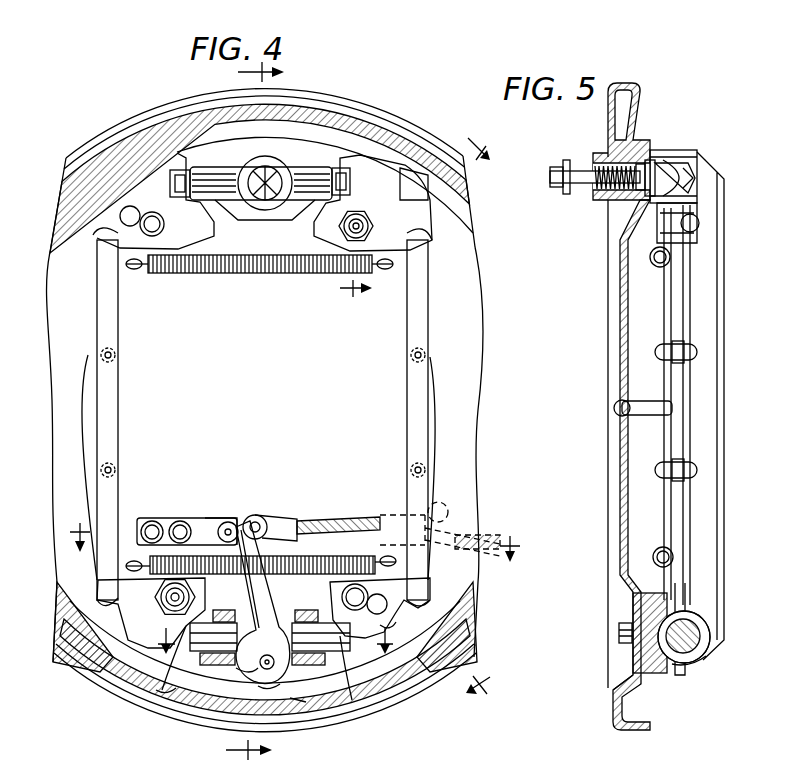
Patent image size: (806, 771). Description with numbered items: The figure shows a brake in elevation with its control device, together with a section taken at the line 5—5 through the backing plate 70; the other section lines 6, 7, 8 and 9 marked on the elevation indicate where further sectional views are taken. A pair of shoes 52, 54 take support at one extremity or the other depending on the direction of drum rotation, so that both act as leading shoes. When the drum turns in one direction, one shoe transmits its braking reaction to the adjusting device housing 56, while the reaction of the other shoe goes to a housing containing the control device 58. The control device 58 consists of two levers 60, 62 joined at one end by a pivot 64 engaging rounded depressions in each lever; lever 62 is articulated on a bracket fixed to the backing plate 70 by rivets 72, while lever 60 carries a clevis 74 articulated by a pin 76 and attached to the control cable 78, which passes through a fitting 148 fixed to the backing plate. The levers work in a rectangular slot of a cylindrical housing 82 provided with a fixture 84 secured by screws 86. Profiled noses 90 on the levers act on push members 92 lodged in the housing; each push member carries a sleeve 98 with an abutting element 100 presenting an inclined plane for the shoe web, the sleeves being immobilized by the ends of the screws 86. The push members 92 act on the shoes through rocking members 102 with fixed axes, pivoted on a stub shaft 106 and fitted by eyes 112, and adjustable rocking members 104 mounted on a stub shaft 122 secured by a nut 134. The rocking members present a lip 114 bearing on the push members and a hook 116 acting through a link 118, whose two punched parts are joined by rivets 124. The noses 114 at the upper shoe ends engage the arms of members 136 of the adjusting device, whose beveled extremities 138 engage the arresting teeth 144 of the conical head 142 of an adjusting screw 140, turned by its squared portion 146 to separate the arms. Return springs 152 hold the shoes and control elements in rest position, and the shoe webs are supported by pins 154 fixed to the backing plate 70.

In FIG. 4, the shoe 52 is at (445, 245).
In FIG. 4, the shoe 54 is at (82, 585).
In FIG. 4, the adjusting device housing 56 is at (374, 90).
In FIG. 4, the control device 58 is at (316, 602).
In FIG. 4, the lever 60 is at (295, 520).
In FIG. 4, the lever 62 is at (214, 517).
In FIG. 5, the lever 62 is at (687, 588).
In FIG. 4, the pivot 64 is at (245, 665).
In FIG. 5, the backing plate 70 is at (621, 313).
In FIG. 4, the rivets 72 is at (178, 521).
In FIG. 4, the clevis 74 is at (280, 513).
In FIG. 4, the pin 76 is at (266, 518).
In FIG. 4, the control cable 78 is at (355, 519).
In FIG. 4, the cylindrical housing 82 is at (298, 700).
In FIG. 5, the cylindrical housing 82 is at (640, 648).
In FIG. 4, the fixture 84 is at (258, 682).
In FIG. 5, the fixture 84 is at (654, 678).
In FIG. 5, the screws 86 is at (619, 636).
In FIG. 4, the profiled noses 90 is at (297, 663).
In FIG. 4, the push members 92 is at (222, 637).
In FIG. 5, the push members 92 is at (701, 628).
In FIG. 4, the sleeve 98 is at (237, 657).
In FIG. 5, the sleeve 98 is at (699, 659).
In FIG. 4, the abutting element 100 is at (160, 692).
In FIG. 4, the rocking members 102 is at (387, 628).
In FIG. 4, the adjustable rocking members 104 is at (393, 204).
In FIG. 4, the stub shaft 106 is at (173, 236).
In FIG. 4, the eyes 112 is at (384, 606).
In FIG. 4, the lip 114 is at (157, 190).
In FIG. 4, the hook 116 is at (97, 237).
In FIG. 4, the link 118 is at (110, 403).
In FIG. 5, the link 118 is at (686, 443).
In FIG. 4, the stub shaft 122 is at (364, 228).
In FIG. 4, the rivets 124 is at (425, 353).
In FIG. 5, the rivets 124 is at (696, 352).
In FIG. 4, the nut 134 is at (398, 200).
In FIG. 4, the members 136 is at (190, 198).
In FIG. 4, the beveled extremity 138 is at (243, 170).
In FIG. 5, the adjusting screw 140 is at (603, 160).
In FIG. 5, the conical head 142 is at (670, 163).
In FIG. 5, the arresting teeth 144 is at (655, 176).
In FIG. 5, the squared portion 146 is at (549, 177).
In FIG. 4, the fitting 148 is at (460, 513).
In FIG. 4, the return springs 152 is at (297, 272).
In FIG. 5, the return springs 152 is at (652, 558).
In FIG. 5, the pins 154 is at (636, 416).
In FIG. 4, the section line 5 is at (263, 413).
In FIG. 4, the section line 6 is at (272, 634).
In FIG. 4, the section line 7 is at (478, 703).
In FIG. 4, the section line 8 is at (424, 225).
In FIG. 4, the section line 9 is at (296, 549).